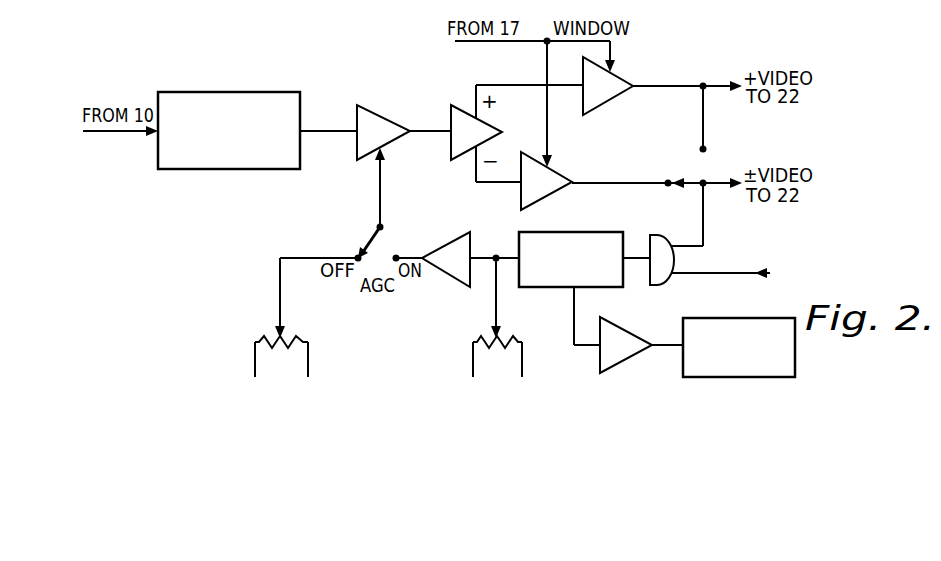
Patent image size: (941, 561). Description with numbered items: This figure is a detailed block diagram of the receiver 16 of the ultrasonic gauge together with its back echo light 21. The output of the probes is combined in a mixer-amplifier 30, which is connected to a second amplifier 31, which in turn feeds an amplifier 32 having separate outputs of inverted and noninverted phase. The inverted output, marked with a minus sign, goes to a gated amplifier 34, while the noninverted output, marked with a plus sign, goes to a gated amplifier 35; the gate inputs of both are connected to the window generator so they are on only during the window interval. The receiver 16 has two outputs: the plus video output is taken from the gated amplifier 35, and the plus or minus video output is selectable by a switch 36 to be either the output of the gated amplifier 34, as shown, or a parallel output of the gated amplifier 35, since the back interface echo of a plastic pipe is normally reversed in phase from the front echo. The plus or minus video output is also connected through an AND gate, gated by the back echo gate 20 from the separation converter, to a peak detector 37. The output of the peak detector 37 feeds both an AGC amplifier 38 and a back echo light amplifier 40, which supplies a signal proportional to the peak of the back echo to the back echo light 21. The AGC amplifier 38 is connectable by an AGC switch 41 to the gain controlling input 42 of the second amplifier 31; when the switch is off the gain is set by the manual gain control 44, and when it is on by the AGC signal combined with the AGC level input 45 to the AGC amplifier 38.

The receiver 16 is at (348, 382).
The back echo gate input 20 is at (722, 274).
The back echo light 21 is at (732, 378).
The mixer-amplifier 30 is at (200, 92).
The second amplifier 31 is at (357, 120).
The amplifier 32 is at (451, 118).
The gated amplifier 34 is at (520, 193).
The gated amplifier 35 is at (620, 80).
The switch 36 is at (685, 180).
The peak detector 37 is at (580, 232).
The AGC amplifier 38 is at (447, 243).
The back echo light amplifier 40 is at (610, 368).
The AGC switch 41 is at (364, 229).
The gain controlling input 42 is at (380, 173).
The manual gain control 44 is at (262, 326).
The AGC level input 45 is at (480, 329).